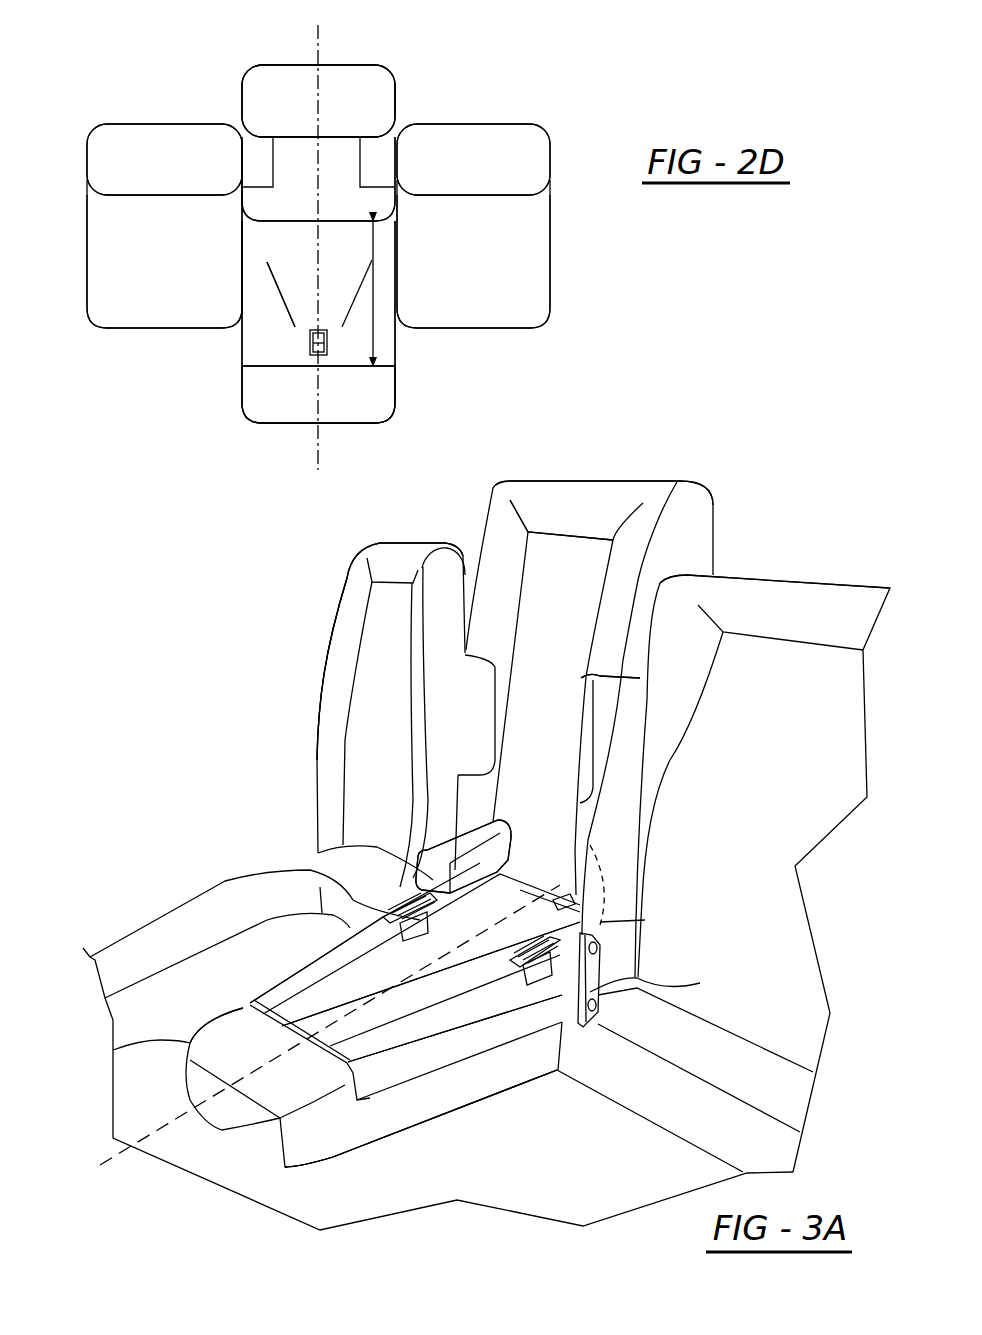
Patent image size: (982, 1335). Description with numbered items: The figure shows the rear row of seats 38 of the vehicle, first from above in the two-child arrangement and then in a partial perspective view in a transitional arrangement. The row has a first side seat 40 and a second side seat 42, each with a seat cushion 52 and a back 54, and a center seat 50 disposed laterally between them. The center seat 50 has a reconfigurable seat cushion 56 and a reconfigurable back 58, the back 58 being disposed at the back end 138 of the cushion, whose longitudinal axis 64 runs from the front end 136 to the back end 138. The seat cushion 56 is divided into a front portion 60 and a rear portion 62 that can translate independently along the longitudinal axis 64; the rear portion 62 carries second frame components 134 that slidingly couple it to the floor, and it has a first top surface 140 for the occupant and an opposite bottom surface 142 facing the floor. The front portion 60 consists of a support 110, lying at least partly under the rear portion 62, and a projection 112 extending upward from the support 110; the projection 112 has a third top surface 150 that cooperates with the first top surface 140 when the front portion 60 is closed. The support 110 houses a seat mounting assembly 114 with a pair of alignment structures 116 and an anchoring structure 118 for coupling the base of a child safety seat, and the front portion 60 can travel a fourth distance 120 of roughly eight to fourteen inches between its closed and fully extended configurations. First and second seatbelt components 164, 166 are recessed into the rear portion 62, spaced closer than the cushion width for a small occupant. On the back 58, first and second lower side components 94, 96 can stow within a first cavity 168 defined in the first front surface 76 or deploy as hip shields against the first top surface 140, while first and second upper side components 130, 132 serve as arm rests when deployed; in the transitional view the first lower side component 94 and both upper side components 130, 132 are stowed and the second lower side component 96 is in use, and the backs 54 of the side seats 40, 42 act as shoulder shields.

In FIG. 2D, the rear row of seats 38 is at (570, 50).
In FIG. 3A, the rear row of seats 38 is at (277, 580).
In FIG. 2D, the first side seat 40 is at (530, 118).
In FIG. 3A, the first side seat 40 is at (832, 603).
In FIG. 2D, the second side seat 42 is at (88, 123).
In FIG. 3A, the second side seat 42 is at (388, 545).
In FIG. 2D, the center seat 50 is at (393, 64).
In FIG. 3A, the center seat 50 is at (683, 483).
In FIG. 2D, the seat cushion 52 is at (103, 233).
In FIG. 3A, the seat cushion 52 is at (233, 908).
In FIG. 2D, the back 54 is at (145, 138).
In FIG. 3A, the back 54 is at (337, 653).
In FIG. 2D, the seat cushion 56 is at (387, 355).
In FIG. 3A, the seat cushion 56 is at (325, 1130).
In FIG. 2D, the back 58 is at (270, 80).
In FIG. 3A, the back 58 is at (585, 497).
In FIG. 2D, the front portion 60 is at (375, 407).
In FIG. 3A, the front portion 60 is at (227, 1019).
In FIG. 2D, the rear portion 62 is at (287, 153).
In FIG. 3A, the rear portion 62 is at (283, 979).
In FIG. 2D, the longitudinal axis 64 is at (320, 38).
In FIG. 3A, the longitudinal axis 64 is at (117, 1160).
In FIG. 3A, the first front surface 76 is at (575, 600).
In FIG. 2D, the first lower side component 94 is at (380, 165).
In FIG. 3A, the first lower side component 94 is at (562, 857).
In FIG. 2D, the second lower side component 96 is at (253, 160).
In FIG. 3A, the second lower side component 96 is at (343, 850).
In FIG. 2D, the support 110 is at (263, 237).
In FIG. 3A, the support 110 is at (390, 1103).
In FIG. 2D, the projection 112 is at (265, 405).
In FIG. 3A, the projection 112 is at (113, 1050).
In FIG. 2D, the seat mounting assembly 114 is at (278, 320).
In FIG. 2D, the alignment structures 116 is at (363, 292).
In FIG. 2D, the anchoring structure 118 is at (307, 345).
In FIG. 2D, the fourth distance 120 is at (373, 337).
In FIG. 3A, the first upper side component 130 is at (607, 705).
In FIG. 3A, the second upper side component 132 is at (472, 703).
In FIG. 3A, the second frame components 134 is at (593, 968).
In FIG. 3A, the front end 136 is at (237, 1118).
In FIG. 3A, the back end 138 is at (560, 868).
In FIG. 3A, the first top surface 140 is at (333, 993).
In FIG. 3A, the bottom surface 142 is at (478, 1043).
In FIG. 3A, the third top surface 150 is at (207, 1062).
In FIG. 3A, the first seatbelt component 164 is at (512, 962).
In FIG. 3A, the second seatbelt component 166 is at (345, 933).
In FIG. 3A, the first cavity 168 is at (528, 838).